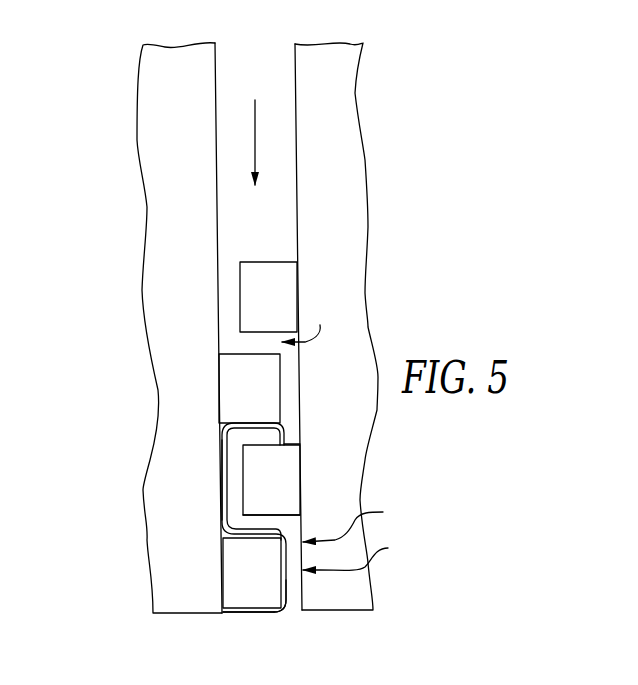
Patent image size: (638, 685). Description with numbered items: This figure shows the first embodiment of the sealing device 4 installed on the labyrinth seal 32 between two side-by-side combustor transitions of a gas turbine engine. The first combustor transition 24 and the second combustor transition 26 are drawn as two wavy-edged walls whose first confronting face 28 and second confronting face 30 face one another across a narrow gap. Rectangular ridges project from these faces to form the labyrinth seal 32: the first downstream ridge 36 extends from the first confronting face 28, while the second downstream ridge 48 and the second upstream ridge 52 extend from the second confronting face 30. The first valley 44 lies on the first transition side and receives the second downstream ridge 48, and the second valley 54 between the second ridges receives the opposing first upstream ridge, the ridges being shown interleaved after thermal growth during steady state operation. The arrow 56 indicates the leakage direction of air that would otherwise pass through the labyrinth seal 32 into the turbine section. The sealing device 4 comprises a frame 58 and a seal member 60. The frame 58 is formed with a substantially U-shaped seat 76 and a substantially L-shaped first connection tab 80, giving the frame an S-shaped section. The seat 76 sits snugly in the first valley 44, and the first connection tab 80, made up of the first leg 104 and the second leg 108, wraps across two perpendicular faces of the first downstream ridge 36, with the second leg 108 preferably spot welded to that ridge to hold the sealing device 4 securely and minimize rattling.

The sealing device 4 is at (206, 437).
The first combustor transition 24 is at (139, 238).
The second combustor transition 26 is at (380, 158).
The first confronting face 28 is at (216, 170).
The second confronting face 30 is at (295, 108).
The labyrinth seal 32 is at (308, 318).
The first downstream ridge 36 is at (238, 575).
The first valley 44 is at (227, 466).
The second downstream ridge 48 is at (272, 516).
The second upstream ridge 52 is at (268, 262).
The second valley 54 is at (303, 378).
The arrow 56 is at (256, 126).
The frame 58 is at (354, 519).
The seal member 60 is at (284, 440).
The seat 76 is at (222, 497).
The first connection tab 80 is at (357, 551).
The first leg 104 is at (287, 588).
The second leg 108 is at (240, 615).